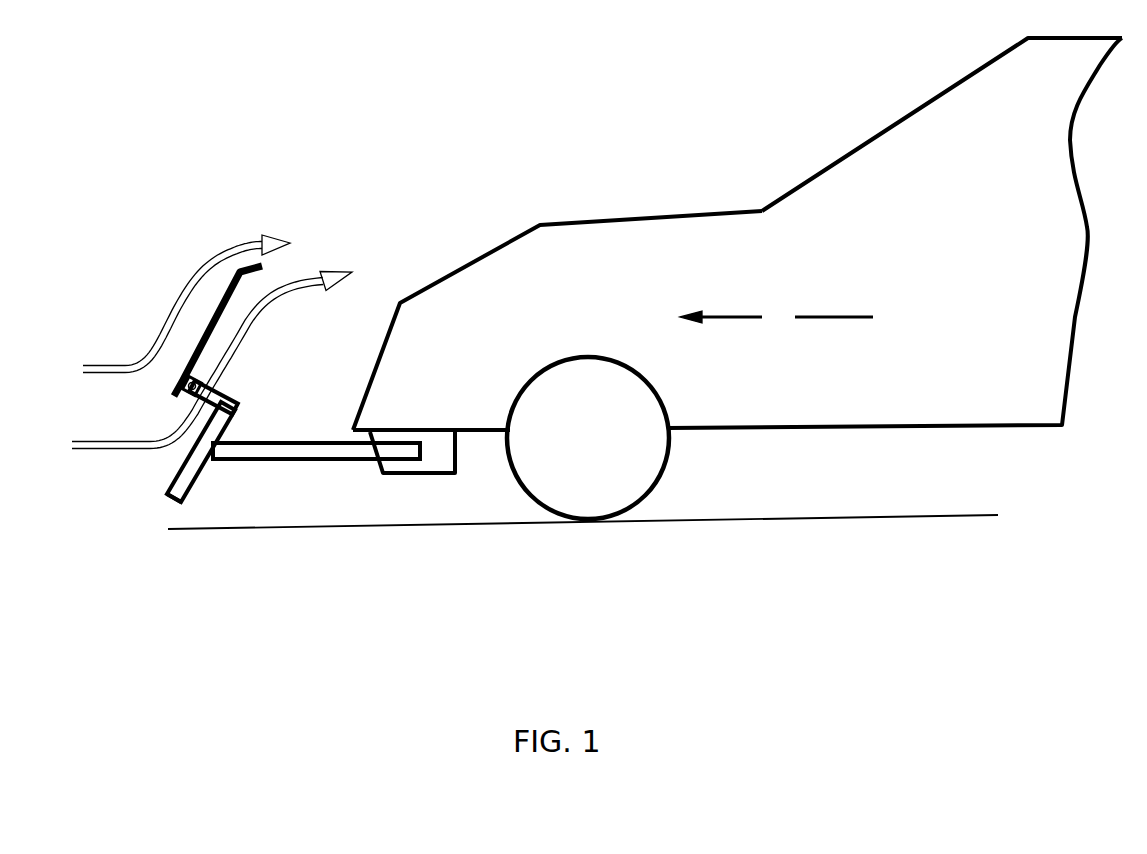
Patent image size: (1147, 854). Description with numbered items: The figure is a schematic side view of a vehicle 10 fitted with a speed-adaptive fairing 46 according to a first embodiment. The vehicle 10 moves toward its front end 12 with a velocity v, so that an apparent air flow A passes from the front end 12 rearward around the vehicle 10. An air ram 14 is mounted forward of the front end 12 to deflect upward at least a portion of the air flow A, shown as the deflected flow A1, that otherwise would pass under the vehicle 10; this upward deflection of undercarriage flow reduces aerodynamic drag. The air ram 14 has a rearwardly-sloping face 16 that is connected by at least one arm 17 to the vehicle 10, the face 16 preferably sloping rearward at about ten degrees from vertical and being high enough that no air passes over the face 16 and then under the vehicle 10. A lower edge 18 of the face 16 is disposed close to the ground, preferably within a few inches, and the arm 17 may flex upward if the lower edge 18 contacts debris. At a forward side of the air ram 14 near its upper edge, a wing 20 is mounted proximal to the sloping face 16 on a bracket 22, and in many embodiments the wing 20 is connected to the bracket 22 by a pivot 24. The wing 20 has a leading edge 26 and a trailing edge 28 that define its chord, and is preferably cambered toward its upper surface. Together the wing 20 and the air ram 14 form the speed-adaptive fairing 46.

The vehicle 10 is at (902, 241).
The front end 12 is at (476, 319).
The air ram 14 is at (197, 467).
The rearwardly-sloping face 16 is at (176, 480).
The arm 17 is at (296, 462).
The lower edge 18 is at (178, 505).
The wing 20 is at (222, 303).
The bracket 22 is at (217, 389).
The pivot 24 is at (183, 381).
The leading edge 26 is at (185, 397).
The trailing edge 28 is at (262, 266).
The speed-adaptive fairing 46 is at (133, 322).
The air flow A is at (183, 301).
The deflected flow A1 is at (96, 450).
The velocity v is at (776, 318).